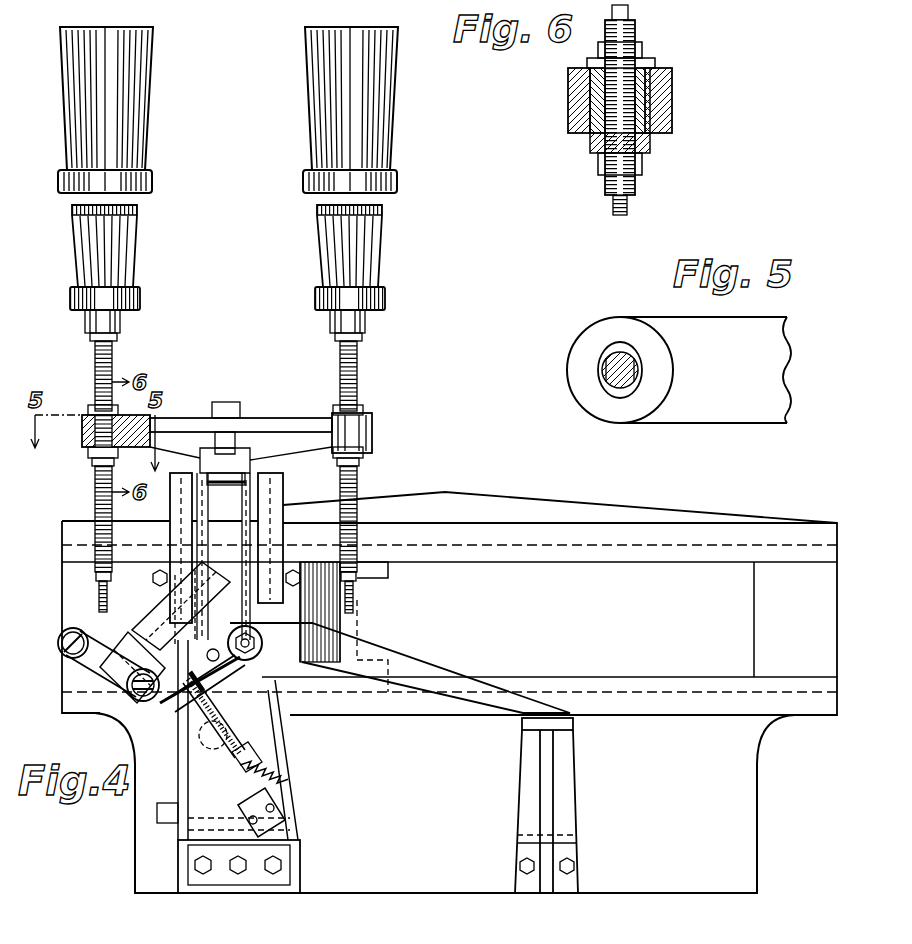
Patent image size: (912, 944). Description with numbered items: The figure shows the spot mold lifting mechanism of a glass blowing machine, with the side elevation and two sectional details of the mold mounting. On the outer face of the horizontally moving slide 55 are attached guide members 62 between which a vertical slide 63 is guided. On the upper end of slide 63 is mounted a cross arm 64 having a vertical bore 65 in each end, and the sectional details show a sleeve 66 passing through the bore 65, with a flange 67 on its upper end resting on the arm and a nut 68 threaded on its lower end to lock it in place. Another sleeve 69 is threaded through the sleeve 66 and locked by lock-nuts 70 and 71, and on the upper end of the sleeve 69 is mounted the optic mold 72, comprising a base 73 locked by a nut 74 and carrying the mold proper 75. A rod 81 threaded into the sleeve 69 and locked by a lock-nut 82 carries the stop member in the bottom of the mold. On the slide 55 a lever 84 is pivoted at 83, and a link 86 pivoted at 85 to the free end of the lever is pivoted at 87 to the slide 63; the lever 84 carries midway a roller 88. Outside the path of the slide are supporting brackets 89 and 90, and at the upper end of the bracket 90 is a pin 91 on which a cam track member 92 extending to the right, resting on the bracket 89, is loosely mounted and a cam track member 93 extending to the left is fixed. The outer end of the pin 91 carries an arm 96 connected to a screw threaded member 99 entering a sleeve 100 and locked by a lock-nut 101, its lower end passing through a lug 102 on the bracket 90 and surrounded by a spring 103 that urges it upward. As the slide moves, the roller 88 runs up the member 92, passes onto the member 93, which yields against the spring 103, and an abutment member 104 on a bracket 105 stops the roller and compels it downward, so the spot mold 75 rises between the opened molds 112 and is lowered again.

In FIG. 4, the mold 112 is at (388, 137).
In FIG. 4, the mold proper 75 is at (138, 213).
In FIG. 4, the optic mold 72 is at (142, 298).
In FIG. 4, the base 73 is at (368, 325).
In FIG. 4, the nut 74 is at (336, 338).
In FIG. 4, the sleeve 69 is at (113, 360).
In FIG. 6, the sleeve 69 is at (632, 198).
In FIG. 4, the cross arm 64 is at (248, 421).
In FIG. 6, the cross arm 64 is at (665, 91).
In FIG. 5, the cross arm 64 is at (735, 413).
In FIG. 4, the sleeve 66 is at (100, 433).
In FIG. 6, the sleeve 66 is at (598, 100).
In FIG. 5, the sleeve 66 is at (612, 392).
In FIG. 4, the slide 63 is at (227, 498).
In FIG. 4, the guide members 62 is at (283, 501).
In FIG. 4, the slide 55 is at (76, 590).
In FIG. 4, the lock-nut 82 is at (107, 585).
In FIG. 4, the rod 81 is at (107, 602).
In FIG. 6, the rod 81 is at (612, 208).
In FIG. 4, the bracket 105 is at (129, 611).
In FIG. 4, the abutment member 104 is at (111, 629).
In FIG. 4, the pivot 83 is at (58, 645).
In FIG. 4, the lever 84 is at (66, 683).
In FIG. 4, the cam track member 93 is at (132, 667).
In FIG. 4, the pivot 87 is at (185, 606).
In FIG. 4, the roller 88 is at (143, 703).
In FIG. 4, the pin 91 is at (262, 643).
In FIG. 4, the cam track member 92 is at (445, 668).
In FIG. 4, the supporting bracket 89 is at (570, 779).
In FIG. 4, the supporting bracket 90 is at (295, 864).
In FIG. 4, the link 86 is at (228, 708).
In FIG. 4, the arm 96 is at (217, 661).
In FIG. 4, the lock-nut 101 is at (223, 693).
In FIG. 4, the sleeve 100 is at (224, 723).
In FIG. 4, the pivot 85 is at (210, 743).
In FIG. 4, the spring 103 is at (246, 781).
In FIG. 4, the lug 102 is at (265, 801).
In FIG. 4, the screw threaded member 99 is at (278, 812).
In FIG. 6, the lock-nut 71 is at (640, 45).
In FIG. 6, the flange 67 is at (655, 62).
In FIG. 6, the vertical bore 65 is at (650, 110).
In FIG. 5, the vertical bore 65 is at (612, 346).
In FIG. 6, the nut 68 is at (652, 147).
In FIG. 6, the lock-nut 70 is at (598, 170).